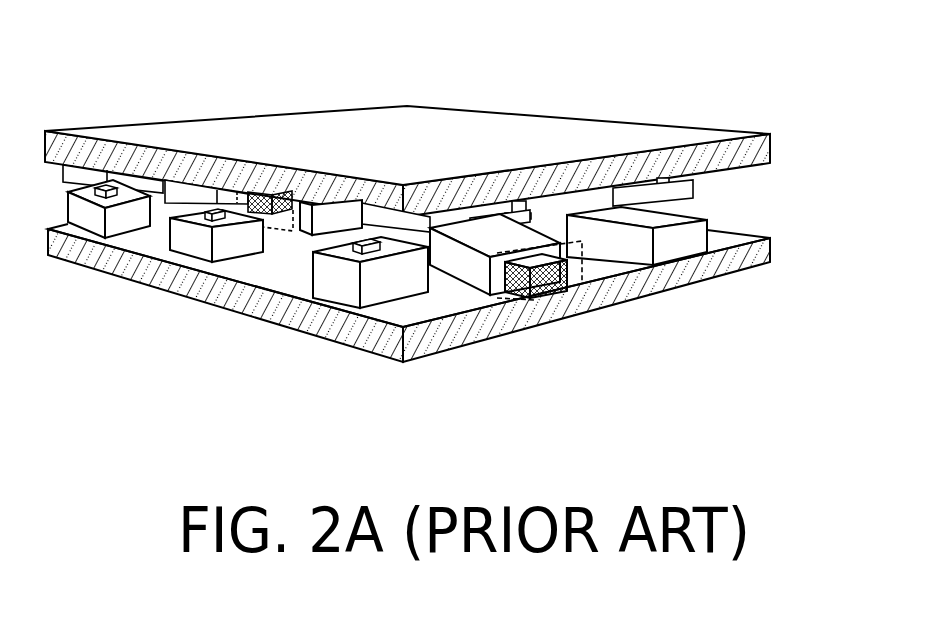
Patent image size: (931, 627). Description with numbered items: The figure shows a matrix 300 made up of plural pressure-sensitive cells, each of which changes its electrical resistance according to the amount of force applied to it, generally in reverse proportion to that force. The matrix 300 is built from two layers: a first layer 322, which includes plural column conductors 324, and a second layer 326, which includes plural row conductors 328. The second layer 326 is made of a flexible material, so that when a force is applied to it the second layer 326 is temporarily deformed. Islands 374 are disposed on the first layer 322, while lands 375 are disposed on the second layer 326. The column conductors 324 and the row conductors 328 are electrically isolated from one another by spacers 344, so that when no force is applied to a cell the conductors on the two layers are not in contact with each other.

The matrix 300 is at (418, 209).
The second layer 326 is at (631, 119).
The first layer 322 is at (684, 293).
The islands 374 is at (110, 233).
The lands 375 is at (331, 218).
The row conductors 328 is at (264, 205).
The column conductors 324 is at (547, 312).
The spacers 344 is at (201, 214).